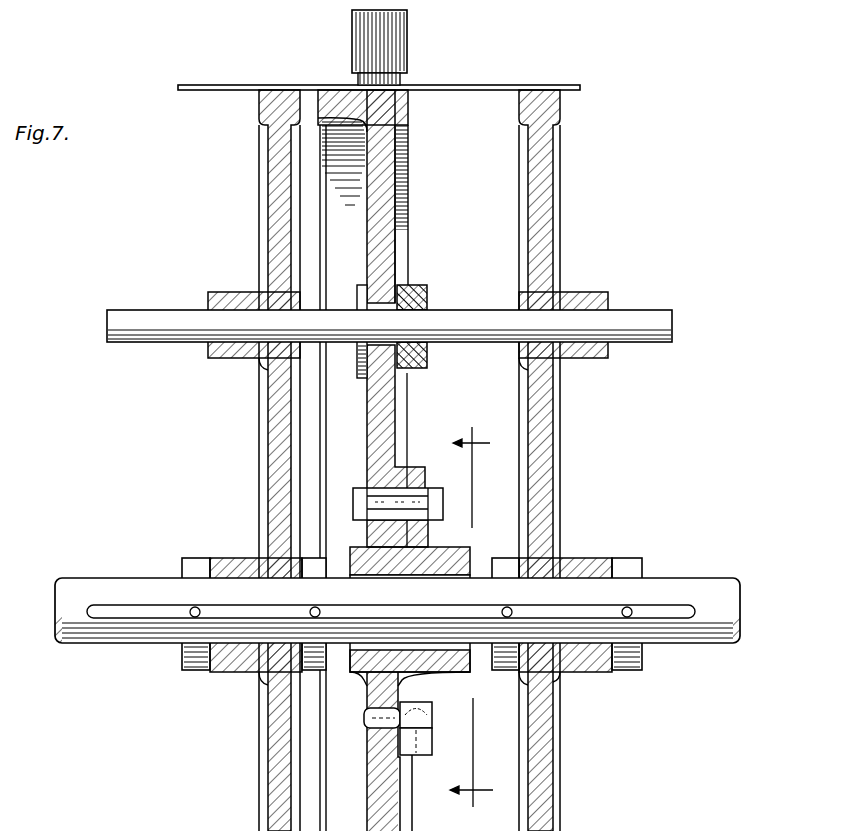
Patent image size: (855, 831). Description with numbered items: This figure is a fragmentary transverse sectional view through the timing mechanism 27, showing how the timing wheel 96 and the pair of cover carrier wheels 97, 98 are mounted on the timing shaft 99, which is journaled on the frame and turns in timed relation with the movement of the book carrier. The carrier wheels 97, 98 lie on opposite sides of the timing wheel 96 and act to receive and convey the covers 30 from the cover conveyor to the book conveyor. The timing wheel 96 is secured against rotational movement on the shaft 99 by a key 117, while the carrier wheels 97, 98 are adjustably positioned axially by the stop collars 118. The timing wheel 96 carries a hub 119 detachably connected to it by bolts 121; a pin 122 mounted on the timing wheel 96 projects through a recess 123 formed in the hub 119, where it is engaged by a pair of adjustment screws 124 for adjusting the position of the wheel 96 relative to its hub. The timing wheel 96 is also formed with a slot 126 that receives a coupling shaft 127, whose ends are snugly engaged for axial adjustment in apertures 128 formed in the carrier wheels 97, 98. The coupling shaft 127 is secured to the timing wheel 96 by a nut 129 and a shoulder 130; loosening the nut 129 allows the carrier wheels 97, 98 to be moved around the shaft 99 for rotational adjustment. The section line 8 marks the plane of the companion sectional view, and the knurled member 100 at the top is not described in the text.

The section line 8— 8 is at (471, 618).
The timing mechanism 27 is at (640, 149).
The covers 30 is at (581, 88).
The timing wheel 96 is at (409, 188).
The cover carrier wheel 97 is at (268, 171).
The cover carrier wheel 98 is at (560, 206).
The timing shaft 99 is at (733, 567).
The knurled knob 100 is at (378, 47).
The key 117 is at (430, 594).
The stop collars 118 is at (312, 570).
The hub 119 is at (460, 548).
The bolts 121 is at (354, 492).
The pin 122 is at (425, 716).
The recess 123 is at (420, 752).
The adjustment screws 124 is at (413, 760).
The slot 126 is at (394, 292).
The coupling shaft 127 is at (665, 322).
The apertures 128 is at (210, 320).
The nut 129 is at (428, 296).
The shoulder 130 is at (358, 292).